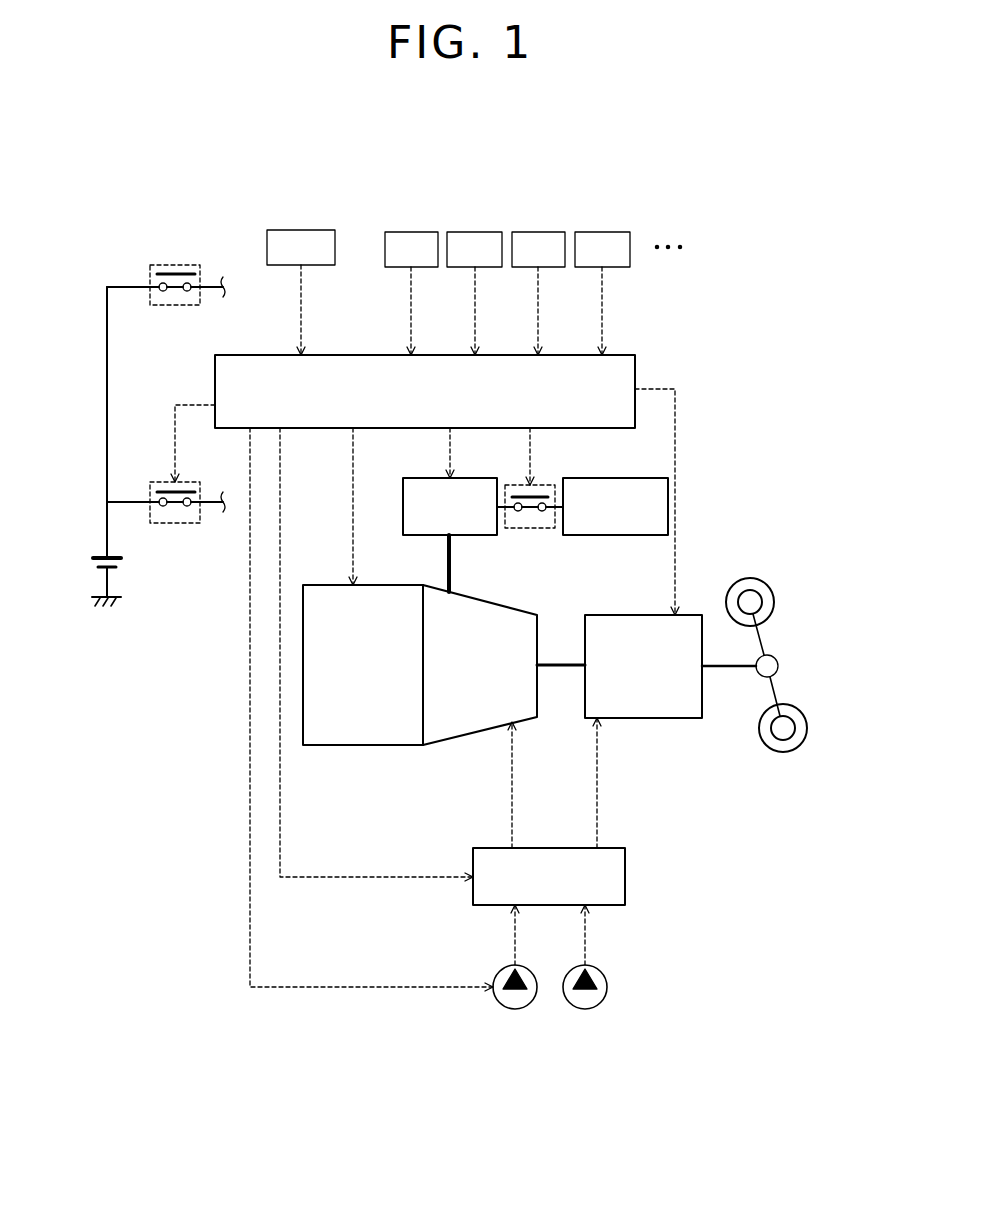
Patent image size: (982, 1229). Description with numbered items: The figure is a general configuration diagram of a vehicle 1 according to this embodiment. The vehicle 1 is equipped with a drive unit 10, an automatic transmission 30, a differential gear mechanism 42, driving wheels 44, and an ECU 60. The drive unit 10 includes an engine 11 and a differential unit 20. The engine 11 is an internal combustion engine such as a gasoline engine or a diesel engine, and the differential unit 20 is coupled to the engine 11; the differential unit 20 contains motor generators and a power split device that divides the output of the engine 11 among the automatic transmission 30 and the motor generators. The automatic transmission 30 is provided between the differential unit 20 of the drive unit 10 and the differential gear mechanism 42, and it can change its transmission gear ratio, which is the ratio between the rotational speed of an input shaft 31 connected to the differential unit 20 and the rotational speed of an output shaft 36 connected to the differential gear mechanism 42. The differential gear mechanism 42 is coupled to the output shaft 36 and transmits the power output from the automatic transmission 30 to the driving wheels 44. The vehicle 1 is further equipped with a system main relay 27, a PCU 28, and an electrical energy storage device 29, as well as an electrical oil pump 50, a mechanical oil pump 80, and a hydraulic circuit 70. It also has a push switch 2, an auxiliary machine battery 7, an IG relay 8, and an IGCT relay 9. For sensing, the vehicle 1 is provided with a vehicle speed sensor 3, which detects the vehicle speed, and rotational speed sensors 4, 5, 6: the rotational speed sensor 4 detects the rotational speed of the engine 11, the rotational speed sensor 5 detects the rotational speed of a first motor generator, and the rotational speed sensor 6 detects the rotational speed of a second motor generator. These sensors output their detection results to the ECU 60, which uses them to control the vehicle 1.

The vehicle 1 is at (528, 181).
The push switch 2 is at (298, 231).
The vehicle speed sensor 3 is at (408, 231).
The rotational speed sensor 4 is at (472, 231).
The rotational speed sensor 5 is at (537, 231).
The rotational speed sensor 6 is at (600, 231).
The auxiliary machine battery 7 is at (100, 556).
The IG relay 8 is at (160, 265).
The IGCT relay 9 is at (160, 482).
The drive unit 10 is at (420, 712).
The engine 11 is at (342, 747).
The differential unit 20 is at (480, 692).
The system main relay 27 is at (530, 484).
The PCU 28 is at (458, 478).
The electrical energy storage device 29 is at (606, 478).
The automatic transmission 30 is at (655, 720).
The input shaft 31 is at (566, 668).
The output shaft 36 is at (734, 668).
The differential gear mechanism 42 is at (780, 666).
The driving wheels 44 is at (748, 578).
The electrical oil pump 50 is at (519, 967).
The ECU 60 is at (336, 354).
The hydraulic circuit 70 is at (612, 849).
The mechanical oil pump 80 is at (589, 967).